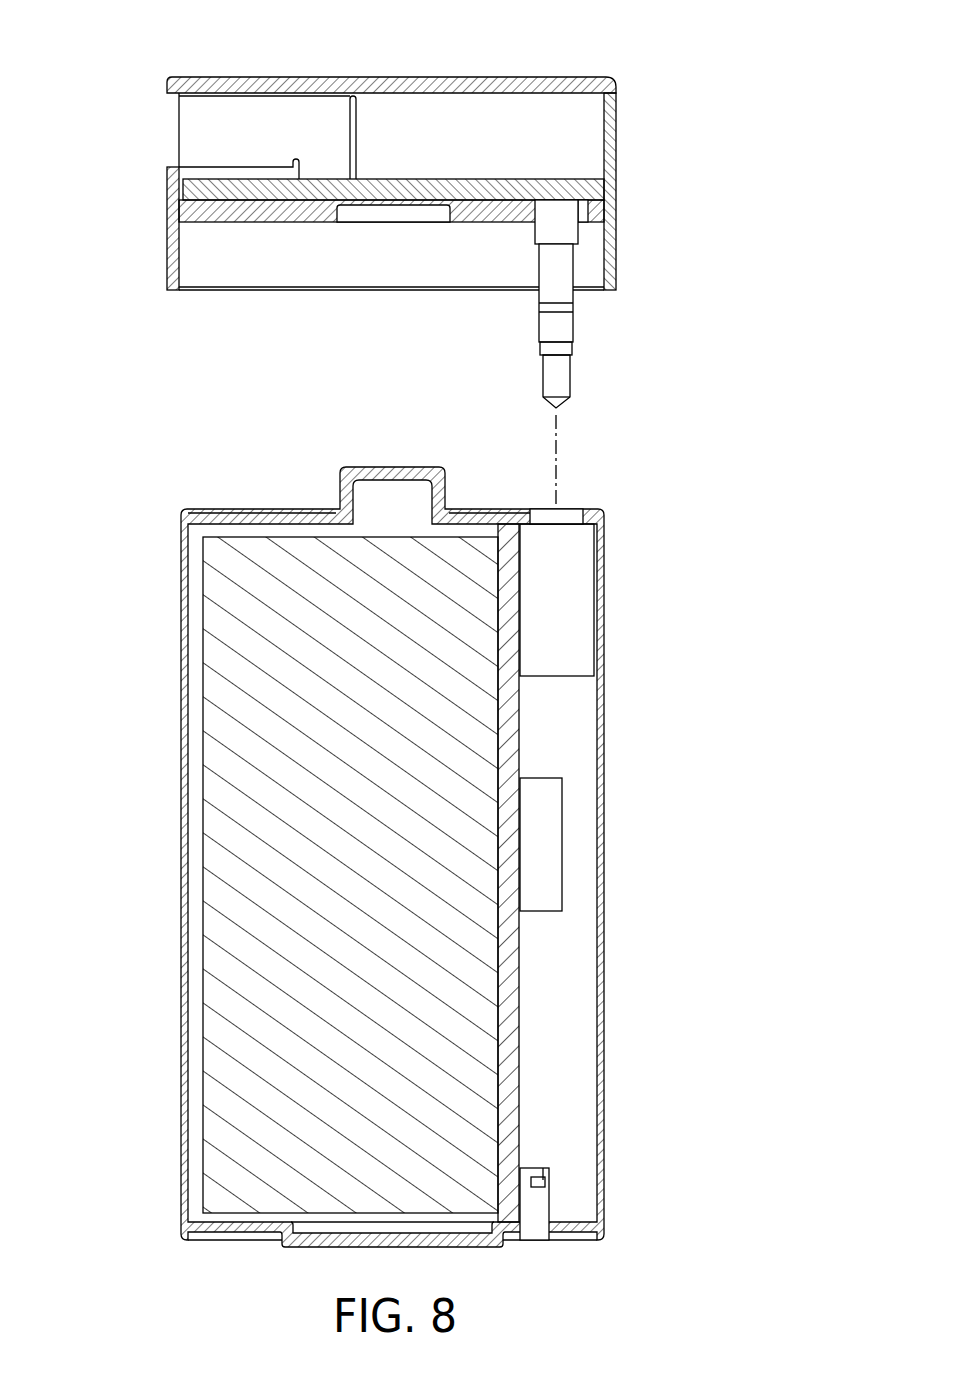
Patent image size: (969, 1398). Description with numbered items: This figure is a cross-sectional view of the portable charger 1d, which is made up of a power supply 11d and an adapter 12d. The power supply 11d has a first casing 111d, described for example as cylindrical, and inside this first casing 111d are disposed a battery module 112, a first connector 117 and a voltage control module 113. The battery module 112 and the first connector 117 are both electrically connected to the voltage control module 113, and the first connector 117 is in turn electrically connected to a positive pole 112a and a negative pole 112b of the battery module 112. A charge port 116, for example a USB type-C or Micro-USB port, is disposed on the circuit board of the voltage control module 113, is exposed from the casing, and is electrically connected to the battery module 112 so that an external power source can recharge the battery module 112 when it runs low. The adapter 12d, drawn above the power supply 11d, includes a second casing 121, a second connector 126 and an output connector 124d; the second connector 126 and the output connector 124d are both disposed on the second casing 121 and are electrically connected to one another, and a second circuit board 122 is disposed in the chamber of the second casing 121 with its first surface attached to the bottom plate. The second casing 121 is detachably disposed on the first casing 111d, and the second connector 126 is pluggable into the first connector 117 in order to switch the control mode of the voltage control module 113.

The portable charger 1d is at (118, 62).
The adapter 12d is at (642, 100).
The second casing 121 is at (483, 76).
The output connector 124d is at (198, 129).
The second circuit board 122 is at (593, 190).
The second connector 126 is at (560, 330).
The power supply 11d is at (638, 500).
The first casing 111d is at (622, 733).
The positive pole 112a is at (397, 467).
The negative pole 112b is at (352, 1250).
The battery module 112 is at (250, 868).
The first connector 117 is at (572, 618).
The voltage control module 113 is at (578, 825).
The charge port 116 is at (535, 1213).